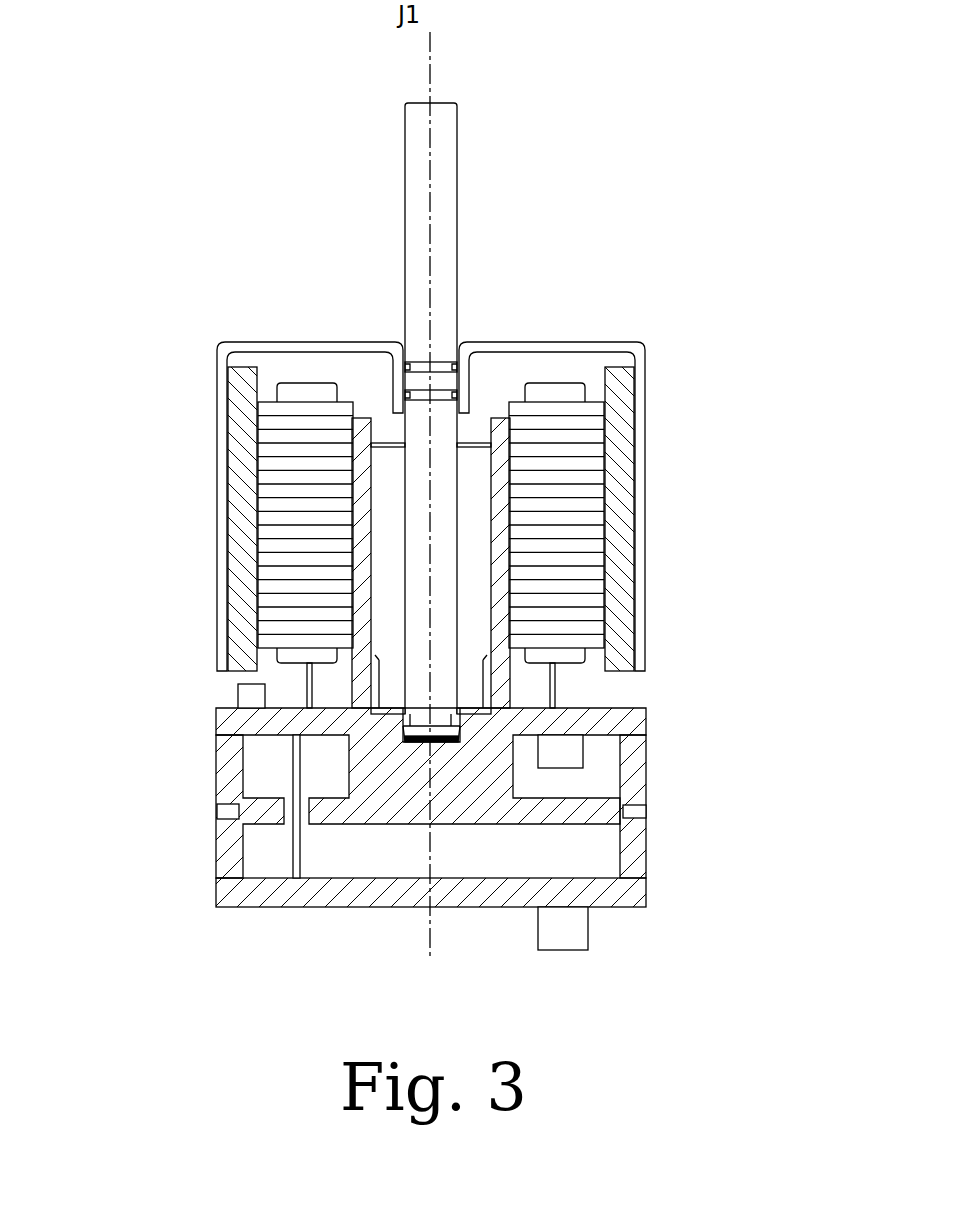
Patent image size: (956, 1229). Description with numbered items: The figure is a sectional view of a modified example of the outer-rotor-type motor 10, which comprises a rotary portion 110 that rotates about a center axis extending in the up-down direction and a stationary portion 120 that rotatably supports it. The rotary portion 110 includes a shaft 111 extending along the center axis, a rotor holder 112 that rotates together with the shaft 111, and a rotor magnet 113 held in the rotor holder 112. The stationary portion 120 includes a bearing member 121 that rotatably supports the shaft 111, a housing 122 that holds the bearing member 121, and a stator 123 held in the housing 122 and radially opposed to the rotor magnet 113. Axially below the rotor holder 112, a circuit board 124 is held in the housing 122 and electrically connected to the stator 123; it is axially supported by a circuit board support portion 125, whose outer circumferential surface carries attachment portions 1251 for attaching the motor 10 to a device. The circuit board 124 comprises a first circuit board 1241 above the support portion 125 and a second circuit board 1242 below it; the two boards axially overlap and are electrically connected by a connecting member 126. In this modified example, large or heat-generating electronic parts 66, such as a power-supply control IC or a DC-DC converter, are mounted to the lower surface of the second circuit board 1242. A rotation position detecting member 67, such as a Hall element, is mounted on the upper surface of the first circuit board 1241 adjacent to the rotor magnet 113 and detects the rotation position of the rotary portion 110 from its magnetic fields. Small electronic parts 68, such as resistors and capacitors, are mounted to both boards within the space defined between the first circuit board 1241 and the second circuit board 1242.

The outer-rotor-type motor 10 is at (303, 101).
The rotary portion 110 is at (195, 325).
The shaft 111 is at (438, 197).
The rotor holder 112 is at (563, 345).
The rotor magnet 113 is at (648, 397).
The stationary portion 120 is at (330, 917).
The bearing member 121 is at (392, 527).
The housing 122 is at (353, 537).
The stator 123 is at (300, 575).
The circuit board 124 is at (216, 882).
The first circuit board 1241 is at (640, 718).
The second circuit board 1242 is at (640, 890).
The circuit board support portion 125 is at (636, 842).
The attachment portions 1251 is at (644, 808).
The connecting member 126 is at (303, 838).
The electronic parts 66 is at (570, 930).
The rotation position detecting member 67 is at (250, 697).
The electronic parts 68 is at (567, 745).